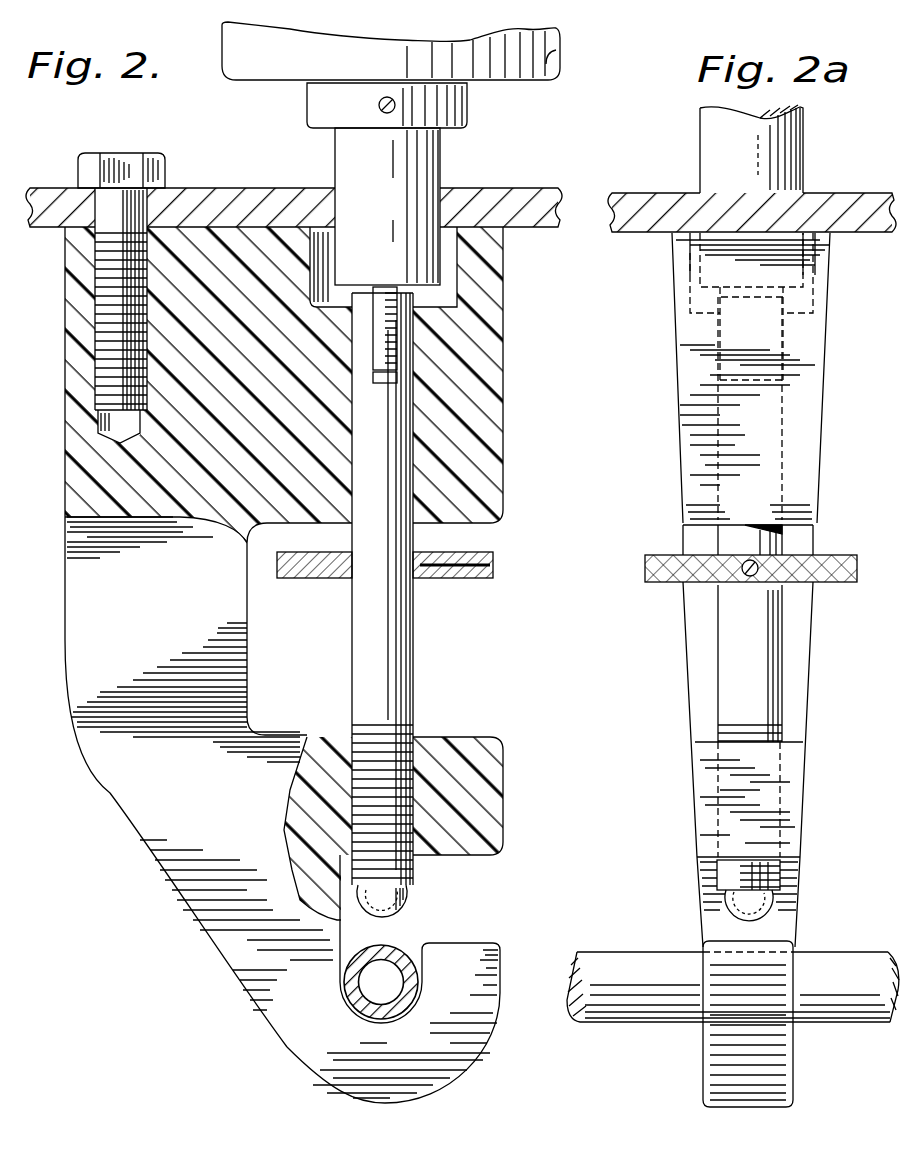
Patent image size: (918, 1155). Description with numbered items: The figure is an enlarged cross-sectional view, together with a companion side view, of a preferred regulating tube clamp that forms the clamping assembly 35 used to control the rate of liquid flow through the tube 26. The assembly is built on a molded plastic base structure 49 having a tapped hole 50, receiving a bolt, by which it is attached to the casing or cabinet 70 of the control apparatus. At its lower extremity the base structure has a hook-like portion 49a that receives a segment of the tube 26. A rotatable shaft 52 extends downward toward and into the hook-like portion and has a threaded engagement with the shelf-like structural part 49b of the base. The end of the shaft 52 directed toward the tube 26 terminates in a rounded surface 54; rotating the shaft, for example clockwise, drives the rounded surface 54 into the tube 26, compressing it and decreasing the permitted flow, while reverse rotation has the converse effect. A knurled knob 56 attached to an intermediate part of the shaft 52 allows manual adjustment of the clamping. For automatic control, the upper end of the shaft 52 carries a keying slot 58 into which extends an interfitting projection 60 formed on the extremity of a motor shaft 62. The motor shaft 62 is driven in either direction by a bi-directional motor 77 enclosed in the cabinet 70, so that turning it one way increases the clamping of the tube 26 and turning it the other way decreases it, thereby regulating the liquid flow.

In FIG. 2, the tube 26 is at (383, 945).
In FIG. 2A, the tube 26 is at (653, 997).
In FIG. 2, the clamping assembly 35 is at (120, 785).
In FIG. 2A, the clamping assembly 35 is at (803, 463).
In FIG. 2, the base structure 49 is at (233, 240).
In FIG. 2A, the base structure 49 is at (820, 253).
In FIG. 2, the hook-like portion 49a is at (440, 1067).
In FIG. 2A, the hook-like portion 49a is at (773, 1077).
In FIG. 2, the shelf-like structural part 49b is at (483, 798).
In FIG. 2A, the shelf-like structural part 49b is at (792, 760).
In FIG. 2, the tapped hole 50 is at (100, 320).
In FIG. 2, the rotatable shaft 52 is at (390, 637).
In FIG. 2A, the rotatable shaft 52 is at (765, 650).
In FIG. 2, the rounded surface 54 is at (387, 907).
In FIG. 2A, the rounded surface 54 is at (770, 913).
In FIG. 2, the knurled knob 56 is at (310, 570).
In FIG. 2A, the knurled knob 56 is at (840, 553).
In FIG. 2, the keying slot 58 is at (392, 381).
In FIG. 2, the interfitting projection 60 is at (390, 325).
In FIG. 2A, the interfitting projection 60 is at (727, 330).
In FIG. 2, the motor shaft 62 is at (430, 162).
In FIG. 2A, the motor shaft 62 is at (780, 153).
In FIG. 2, the control apparatus casing 70 is at (180, 192).
In FIG. 2A, the control apparatus casing 70 is at (643, 197).
In FIG. 2, the motor 77 is at (540, 56).